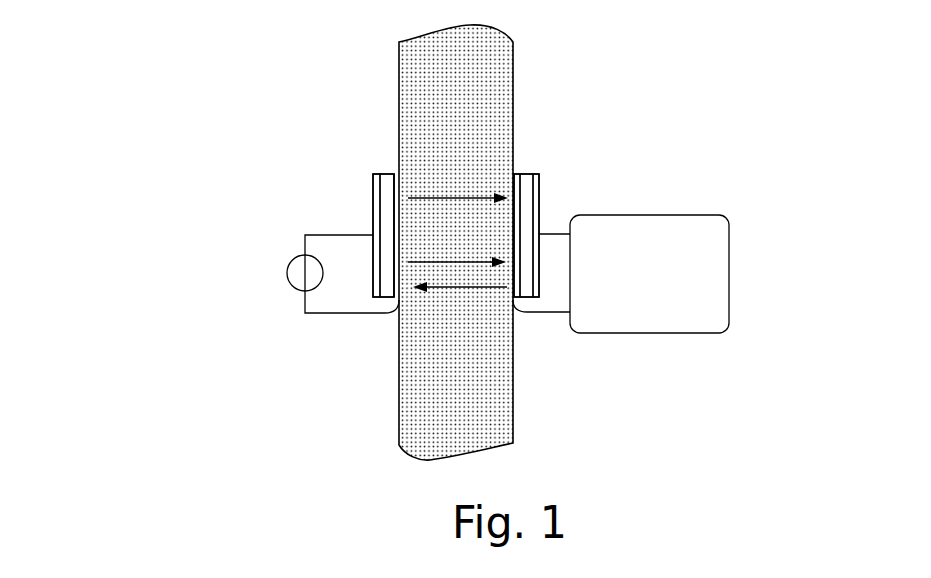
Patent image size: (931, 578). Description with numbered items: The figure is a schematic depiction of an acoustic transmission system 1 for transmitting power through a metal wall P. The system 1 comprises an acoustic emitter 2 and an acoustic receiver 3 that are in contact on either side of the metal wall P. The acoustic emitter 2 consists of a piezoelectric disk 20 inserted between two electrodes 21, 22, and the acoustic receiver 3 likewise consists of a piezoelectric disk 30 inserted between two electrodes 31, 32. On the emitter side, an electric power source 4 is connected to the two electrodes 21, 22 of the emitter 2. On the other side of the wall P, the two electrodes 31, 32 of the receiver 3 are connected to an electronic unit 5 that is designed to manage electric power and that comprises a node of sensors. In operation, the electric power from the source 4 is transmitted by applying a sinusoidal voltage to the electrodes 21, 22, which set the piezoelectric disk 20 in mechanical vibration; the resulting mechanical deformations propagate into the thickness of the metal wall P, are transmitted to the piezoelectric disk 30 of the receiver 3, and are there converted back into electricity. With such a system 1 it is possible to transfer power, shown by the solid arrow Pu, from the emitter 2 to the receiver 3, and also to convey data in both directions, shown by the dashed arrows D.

The acoustic transmission system 1 is at (172, 195).
The acoustic emitter 2 is at (265, 112).
The piezoelectric disk 20 is at (385, 214).
The electrode 21 is at (377, 220).
The electrode 22 is at (385, 183).
The acoustic receiver 3 is at (640, 100).
The piezoelectric disk 30 is at (528, 199).
The electrode 31 is at (520, 216).
The electrode 32 is at (518, 183).
The electric power source 4 is at (286, 277).
The electronic unit 5 is at (649, 274).
The metal wall P is at (513, 79).
The power transfer arrow Pu is at (458, 188).
The data transfer arrows D is at (457, 265).